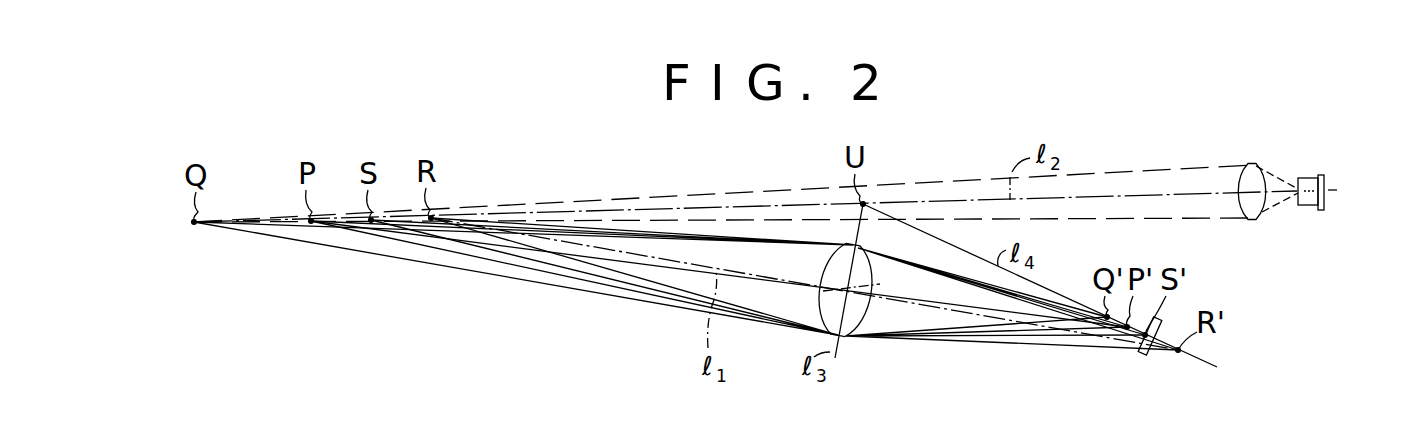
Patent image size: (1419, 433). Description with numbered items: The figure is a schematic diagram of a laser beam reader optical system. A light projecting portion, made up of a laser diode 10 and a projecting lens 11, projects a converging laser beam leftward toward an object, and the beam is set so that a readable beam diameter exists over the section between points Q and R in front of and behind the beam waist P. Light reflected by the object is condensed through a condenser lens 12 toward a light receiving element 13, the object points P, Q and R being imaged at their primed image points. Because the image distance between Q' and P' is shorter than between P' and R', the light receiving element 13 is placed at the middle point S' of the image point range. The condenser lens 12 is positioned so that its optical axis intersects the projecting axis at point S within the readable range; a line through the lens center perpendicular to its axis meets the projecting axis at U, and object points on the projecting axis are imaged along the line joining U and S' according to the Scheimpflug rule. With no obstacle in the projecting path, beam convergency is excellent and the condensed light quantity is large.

The laser diode 10 is at (1306, 178).
The projecting lens 11 is at (1252, 172).
The condenser lens 12 is at (848, 337).
The light receiving element 13 is at (1143, 352).